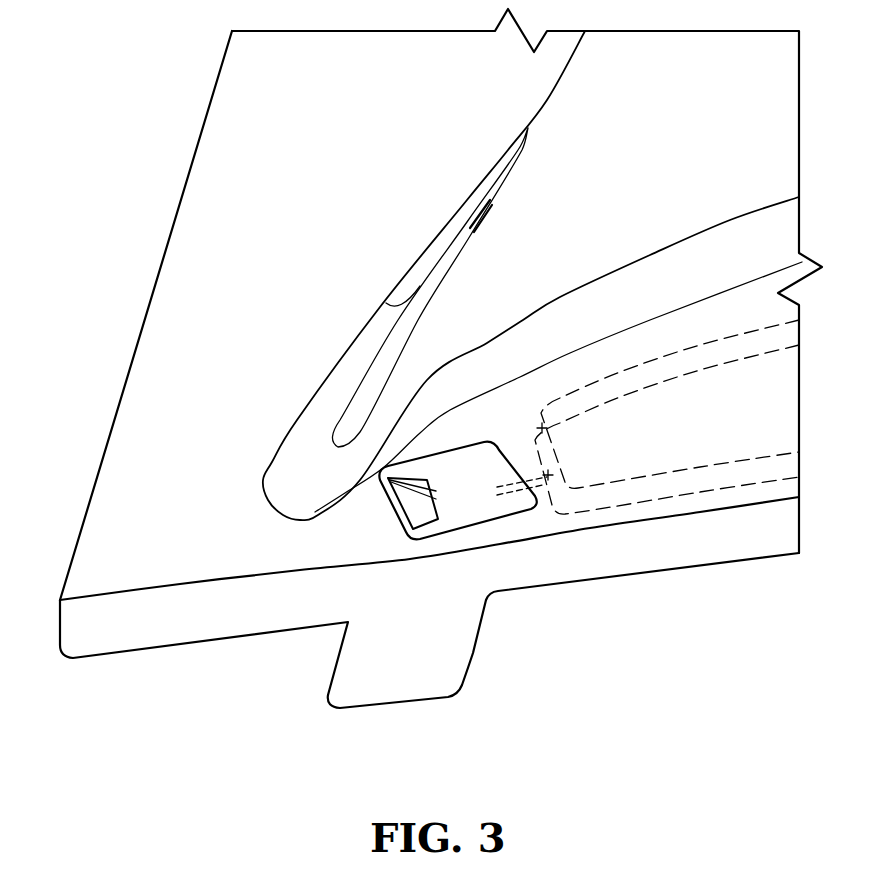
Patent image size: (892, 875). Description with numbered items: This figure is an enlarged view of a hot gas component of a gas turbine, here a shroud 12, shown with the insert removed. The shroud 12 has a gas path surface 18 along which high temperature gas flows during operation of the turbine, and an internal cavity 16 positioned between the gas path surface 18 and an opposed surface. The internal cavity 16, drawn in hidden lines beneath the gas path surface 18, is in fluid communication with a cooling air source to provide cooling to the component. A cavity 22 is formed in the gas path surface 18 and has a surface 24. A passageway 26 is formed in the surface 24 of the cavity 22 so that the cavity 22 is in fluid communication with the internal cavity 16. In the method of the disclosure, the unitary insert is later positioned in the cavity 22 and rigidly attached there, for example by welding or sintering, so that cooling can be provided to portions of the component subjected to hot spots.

The shroud 12 is at (163, 645).
The internal cavity 16 is at (642, 478).
The gas path surface 18 is at (202, 530).
The cavity 22 is at (498, 480).
The surface 24 is at (457, 490).
The passageway 26 is at (548, 478).